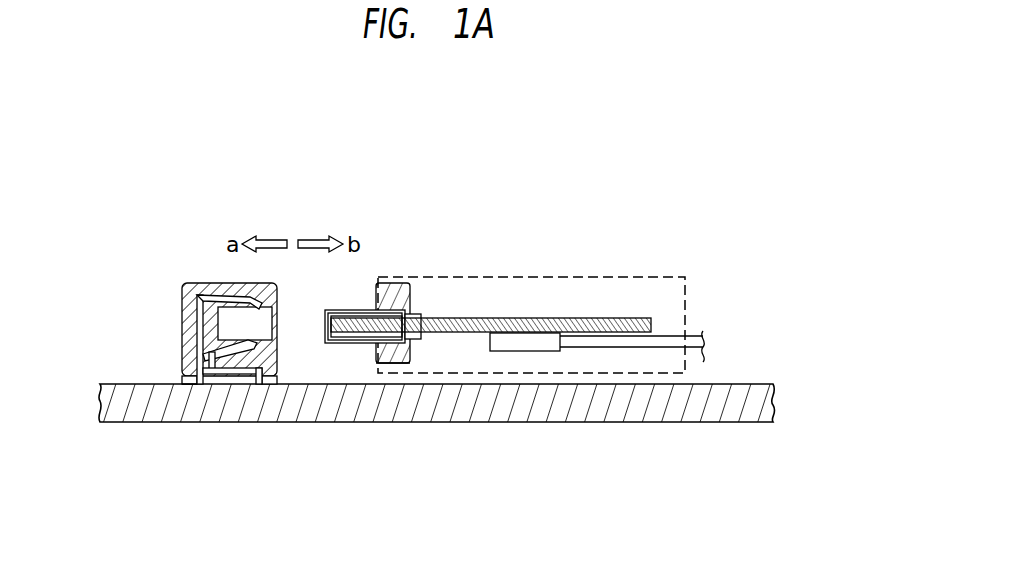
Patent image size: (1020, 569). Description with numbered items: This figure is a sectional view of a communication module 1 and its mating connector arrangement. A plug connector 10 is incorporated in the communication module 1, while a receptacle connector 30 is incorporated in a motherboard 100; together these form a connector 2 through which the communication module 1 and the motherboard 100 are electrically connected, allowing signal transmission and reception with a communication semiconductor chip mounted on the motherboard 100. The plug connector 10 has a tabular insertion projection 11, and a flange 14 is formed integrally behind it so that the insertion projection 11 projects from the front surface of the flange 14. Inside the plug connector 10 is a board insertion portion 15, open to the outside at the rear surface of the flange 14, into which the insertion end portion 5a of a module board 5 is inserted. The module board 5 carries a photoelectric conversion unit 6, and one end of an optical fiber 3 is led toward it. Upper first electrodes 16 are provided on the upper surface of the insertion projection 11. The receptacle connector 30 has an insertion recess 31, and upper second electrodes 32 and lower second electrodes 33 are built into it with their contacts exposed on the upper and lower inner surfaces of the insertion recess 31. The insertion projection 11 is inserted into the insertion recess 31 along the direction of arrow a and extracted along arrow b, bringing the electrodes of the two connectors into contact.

The communication module 1 is at (658, 216).
The connector 2 is at (163, 277).
The plug connector 10 is at (522, 349).
The receptacle connector 30 is at (189, 368).
The optical fiber 3 is at (632, 343).
The module board 5 is at (553, 316).
The insertion end portion 5a is at (382, 346).
The photoelectric conversion unit 6 is at (516, 351).
The insertion projection 11 is at (320, 334).
The flange 14 is at (396, 284).
The board insertion portion 15 is at (342, 337).
The upper first electrodes 16 is at (330, 316).
The insertion recess 31 is at (268, 332).
The upper second electrodes 32 is at (232, 290).
The lower second electrodes 33 is at (232, 372).
The motherboard 100 is at (125, 384).